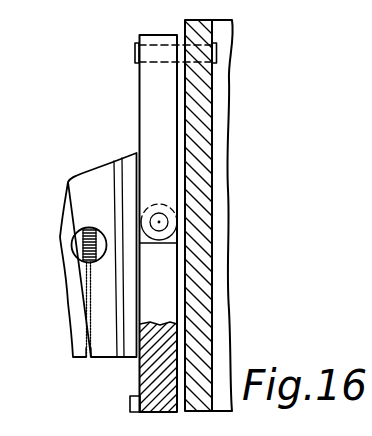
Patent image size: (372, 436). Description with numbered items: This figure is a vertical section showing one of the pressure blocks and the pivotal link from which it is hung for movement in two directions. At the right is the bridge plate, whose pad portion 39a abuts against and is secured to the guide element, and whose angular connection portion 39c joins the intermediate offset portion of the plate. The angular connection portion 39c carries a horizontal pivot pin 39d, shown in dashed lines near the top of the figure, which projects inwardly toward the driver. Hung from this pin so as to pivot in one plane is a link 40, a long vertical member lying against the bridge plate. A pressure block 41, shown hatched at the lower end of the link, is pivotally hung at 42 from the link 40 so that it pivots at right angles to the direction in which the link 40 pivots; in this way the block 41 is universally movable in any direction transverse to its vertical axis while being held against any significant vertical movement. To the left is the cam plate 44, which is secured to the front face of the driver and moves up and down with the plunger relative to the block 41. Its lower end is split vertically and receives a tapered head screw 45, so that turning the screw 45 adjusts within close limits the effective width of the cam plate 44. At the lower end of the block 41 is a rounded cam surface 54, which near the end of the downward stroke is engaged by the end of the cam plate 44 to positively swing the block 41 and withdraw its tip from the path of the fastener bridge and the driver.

The pad portion 39a is at (287, 340).
The angular connection portion 39c is at (197, 208).
The horizontal pivot pin 39d is at (136, 47).
The link 40 is at (148, 122).
The pressure block 41 is at (150, 370).
The pivot 42 is at (159, 222).
The cam plate 44 is at (72, 338).
The tapered head screw 45 is at (78, 247).
The rounded cam surface 54 is at (130, 400).